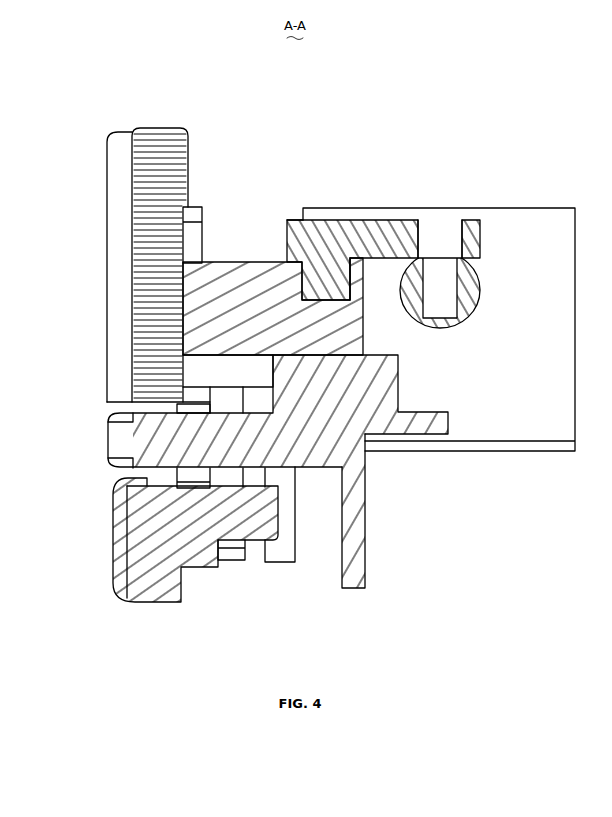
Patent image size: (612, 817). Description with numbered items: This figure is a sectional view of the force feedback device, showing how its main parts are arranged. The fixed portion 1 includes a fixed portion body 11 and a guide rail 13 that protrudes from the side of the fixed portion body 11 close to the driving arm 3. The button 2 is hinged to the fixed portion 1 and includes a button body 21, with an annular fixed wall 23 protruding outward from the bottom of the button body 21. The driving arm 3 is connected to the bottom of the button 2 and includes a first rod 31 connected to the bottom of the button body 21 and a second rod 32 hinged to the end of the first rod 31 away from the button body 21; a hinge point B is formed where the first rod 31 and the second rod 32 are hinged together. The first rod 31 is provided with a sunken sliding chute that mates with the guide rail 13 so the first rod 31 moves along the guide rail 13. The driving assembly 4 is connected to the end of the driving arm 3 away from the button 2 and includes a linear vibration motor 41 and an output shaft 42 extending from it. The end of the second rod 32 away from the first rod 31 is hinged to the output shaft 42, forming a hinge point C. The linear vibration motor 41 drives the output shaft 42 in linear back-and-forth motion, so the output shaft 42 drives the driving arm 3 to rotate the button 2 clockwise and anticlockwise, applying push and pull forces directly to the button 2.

The fixed portion 1 is at (288, 618).
The fixed portion body 11 is at (307, 468).
The guide rail 13 is at (345, 370).
The button 2 is at (62, 210).
The button body 21 is at (183, 264).
The annular fixed wall 23 is at (190, 208).
The driving arm 3 is at (338, 145).
The first rod 31 is at (240, 285).
The second rod 32 is at (327, 245).
The driving assembly 4 is at (528, 147).
The linear vibration motor 41 is at (520, 225).
The output shaft 42 is at (477, 220).
The hinge point B is at (347, 256).
The hinge point C is at (435, 222).